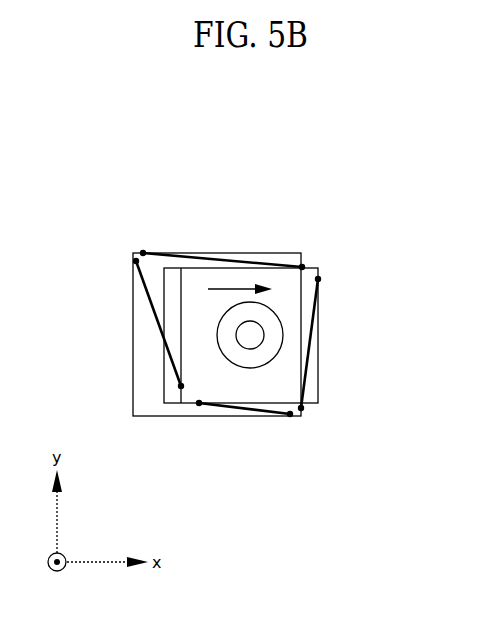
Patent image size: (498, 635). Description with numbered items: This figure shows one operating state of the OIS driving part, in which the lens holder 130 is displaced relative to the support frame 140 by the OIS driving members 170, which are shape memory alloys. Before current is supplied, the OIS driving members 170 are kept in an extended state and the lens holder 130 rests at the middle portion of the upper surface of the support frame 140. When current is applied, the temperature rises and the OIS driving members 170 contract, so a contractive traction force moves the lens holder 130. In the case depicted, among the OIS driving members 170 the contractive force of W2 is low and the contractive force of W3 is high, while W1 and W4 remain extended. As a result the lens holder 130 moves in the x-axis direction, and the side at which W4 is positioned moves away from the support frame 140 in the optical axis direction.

The lens holder 130 is at (191, 268).
The support frame 140 is at (133, 290).
The OIS driving members 170 is at (236, 331).
The OIS driving member W1 is at (222, 255).
The OIS driving member W2 is at (316, 343).
The OIS driving member W3 is at (244, 417).
The OIS driving member W4 is at (158, 323).